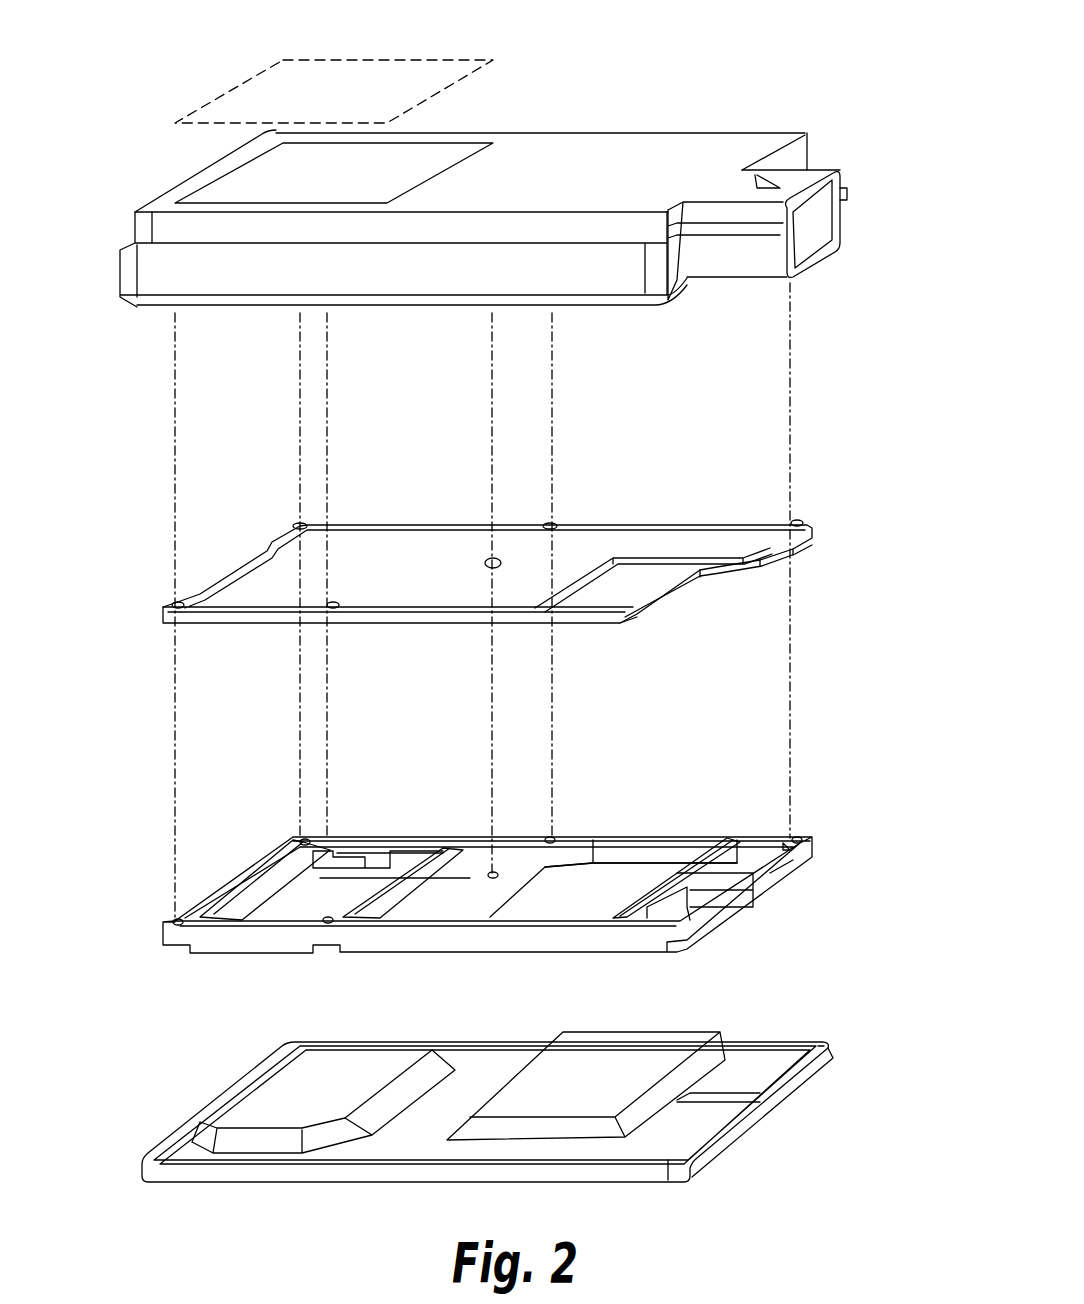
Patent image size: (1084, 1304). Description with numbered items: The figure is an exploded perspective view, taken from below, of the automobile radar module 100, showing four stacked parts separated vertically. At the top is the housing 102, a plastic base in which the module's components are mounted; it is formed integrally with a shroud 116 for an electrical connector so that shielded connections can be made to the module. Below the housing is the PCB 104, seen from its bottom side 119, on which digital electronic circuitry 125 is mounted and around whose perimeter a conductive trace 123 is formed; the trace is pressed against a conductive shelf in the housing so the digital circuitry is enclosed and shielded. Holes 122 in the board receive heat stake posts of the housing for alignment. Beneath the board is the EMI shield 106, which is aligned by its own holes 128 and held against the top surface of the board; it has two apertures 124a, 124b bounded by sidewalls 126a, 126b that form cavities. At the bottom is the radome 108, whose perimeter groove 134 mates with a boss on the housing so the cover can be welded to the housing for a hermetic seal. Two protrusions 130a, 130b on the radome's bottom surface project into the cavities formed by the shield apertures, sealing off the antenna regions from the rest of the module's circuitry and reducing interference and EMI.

The automobile radar module 100 is at (570, 87).
The housing 102 is at (810, 157).
The PCB 104 is at (813, 532).
The EMI shield 106 is at (813, 848).
The radome 108 is at (833, 1055).
The shroud 116 is at (742, 280).
The bottom side of PCB 119 is at (386, 564).
The holes 122 is at (175, 604).
The conductive trace 123 is at (557, 592).
The aperture 124a is at (612, 882).
The aperture 124b is at (257, 907).
The digital electronic circuitry 125 is at (451, 579).
The sidewalls 126a is at (660, 857).
The sidewalls 126b is at (278, 862).
The holes 128 is at (174, 919).
The protrusion 130a is at (640, 1055).
The protrusion 130b is at (255, 1106).
The groove 134 is at (817, 1050).